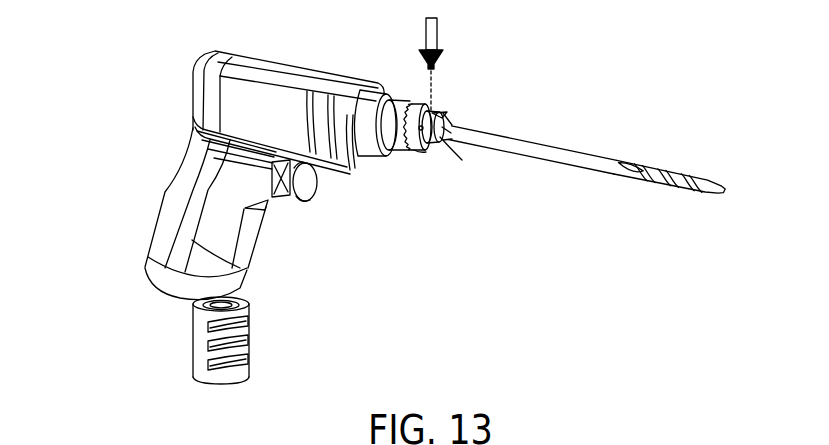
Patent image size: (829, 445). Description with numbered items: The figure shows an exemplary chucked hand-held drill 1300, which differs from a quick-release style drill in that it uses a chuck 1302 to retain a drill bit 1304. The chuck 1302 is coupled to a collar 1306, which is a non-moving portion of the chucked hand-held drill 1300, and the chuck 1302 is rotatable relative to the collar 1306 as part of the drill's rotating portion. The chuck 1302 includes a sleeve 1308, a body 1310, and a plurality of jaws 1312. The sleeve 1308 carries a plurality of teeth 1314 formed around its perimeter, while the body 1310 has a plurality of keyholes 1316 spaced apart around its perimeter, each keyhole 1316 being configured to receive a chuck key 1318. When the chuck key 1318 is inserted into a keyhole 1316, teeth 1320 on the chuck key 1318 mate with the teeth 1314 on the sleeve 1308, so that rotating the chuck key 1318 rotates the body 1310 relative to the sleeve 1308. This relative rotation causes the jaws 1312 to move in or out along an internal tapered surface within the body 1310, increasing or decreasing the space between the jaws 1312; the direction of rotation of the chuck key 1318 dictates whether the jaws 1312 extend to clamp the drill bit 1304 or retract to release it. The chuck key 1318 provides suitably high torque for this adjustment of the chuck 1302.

The chucked hand-held drill 1300 is at (136, 29).
The chuck 1302 is at (447, 103).
The drill bit 1304 is at (536, 146).
The collar 1306 is at (378, 158).
The sleeve 1308 is at (404, 152).
The body 1310 is at (432, 145).
The jaws 1312 is at (442, 140).
The teeth 1314 is at (423, 157).
The keyholes 1316 is at (442, 118).
The chuck key 1318 is at (438, 28).
The teeth 1320 is at (424, 58).